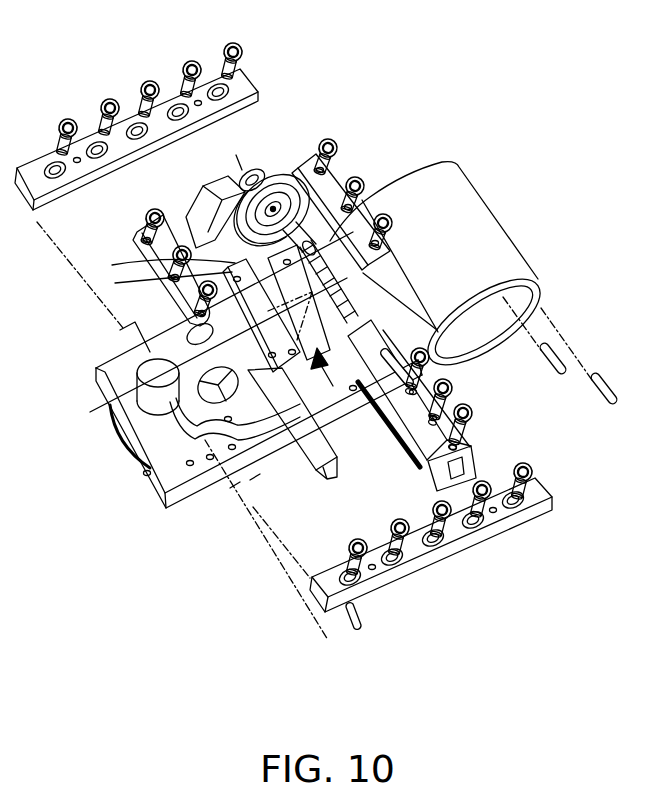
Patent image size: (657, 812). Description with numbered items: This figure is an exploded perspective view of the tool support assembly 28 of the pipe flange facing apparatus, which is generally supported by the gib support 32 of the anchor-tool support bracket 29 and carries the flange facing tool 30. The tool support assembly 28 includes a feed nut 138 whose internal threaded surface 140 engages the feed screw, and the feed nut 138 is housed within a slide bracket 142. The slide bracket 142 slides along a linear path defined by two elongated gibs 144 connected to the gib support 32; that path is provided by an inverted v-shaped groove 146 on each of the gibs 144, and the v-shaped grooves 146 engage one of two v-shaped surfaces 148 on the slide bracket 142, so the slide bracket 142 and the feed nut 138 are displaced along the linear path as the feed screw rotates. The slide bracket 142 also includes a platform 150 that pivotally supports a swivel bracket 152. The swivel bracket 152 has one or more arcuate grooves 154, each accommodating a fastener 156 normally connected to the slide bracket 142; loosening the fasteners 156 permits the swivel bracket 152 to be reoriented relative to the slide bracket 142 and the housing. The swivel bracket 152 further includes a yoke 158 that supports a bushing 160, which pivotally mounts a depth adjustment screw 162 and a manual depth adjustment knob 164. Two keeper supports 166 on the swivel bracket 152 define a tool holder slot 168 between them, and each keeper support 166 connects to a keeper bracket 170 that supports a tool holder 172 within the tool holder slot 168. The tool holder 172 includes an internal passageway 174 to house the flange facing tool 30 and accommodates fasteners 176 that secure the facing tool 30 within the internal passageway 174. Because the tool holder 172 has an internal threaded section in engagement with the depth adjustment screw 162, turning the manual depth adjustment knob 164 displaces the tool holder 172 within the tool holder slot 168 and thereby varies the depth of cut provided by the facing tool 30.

The tool support assembly 28 is at (332, 84).
The anchor-tool support bracket 29 is at (440, 160).
The flange facing tool 30 is at (322, 460).
The gib support 32 is at (133, 468).
The feed nut 138 is at (132, 378).
The internal threaded surface 140 is at (110, 398).
The slide bracket 142 is at (277, 440).
The elongated gibs 144 is at (168, 97).
The inverted v-shaped groove 146 is at (72, 195).
The v-shaped surfaces 148 is at (235, 490).
The platform 150 is at (255, 478).
The swivel bracket 152 is at (187, 233).
The arcuate grooves 154 is at (162, 348).
The fastener 156 is at (152, 485).
The yoke 158 is at (198, 200).
The bushing 160 is at (248, 167).
The depth adjustment screw 162 is at (393, 210).
The manual depth adjustment knob 164 is at (300, 137).
The keeper supports 166 is at (370, 307).
The tool holder slot 168 is at (330, 410).
The keeper bracket 170 is at (343, 163).
The tool holder 172 is at (452, 403).
The internal passageway 174 is at (482, 473).
The fasteners 176 is at (472, 423).